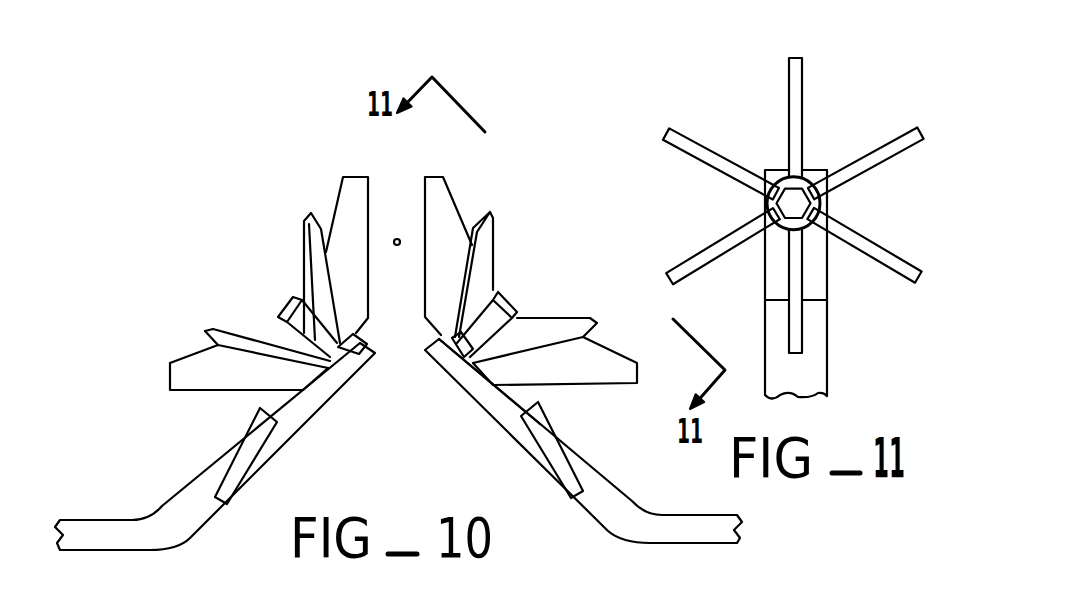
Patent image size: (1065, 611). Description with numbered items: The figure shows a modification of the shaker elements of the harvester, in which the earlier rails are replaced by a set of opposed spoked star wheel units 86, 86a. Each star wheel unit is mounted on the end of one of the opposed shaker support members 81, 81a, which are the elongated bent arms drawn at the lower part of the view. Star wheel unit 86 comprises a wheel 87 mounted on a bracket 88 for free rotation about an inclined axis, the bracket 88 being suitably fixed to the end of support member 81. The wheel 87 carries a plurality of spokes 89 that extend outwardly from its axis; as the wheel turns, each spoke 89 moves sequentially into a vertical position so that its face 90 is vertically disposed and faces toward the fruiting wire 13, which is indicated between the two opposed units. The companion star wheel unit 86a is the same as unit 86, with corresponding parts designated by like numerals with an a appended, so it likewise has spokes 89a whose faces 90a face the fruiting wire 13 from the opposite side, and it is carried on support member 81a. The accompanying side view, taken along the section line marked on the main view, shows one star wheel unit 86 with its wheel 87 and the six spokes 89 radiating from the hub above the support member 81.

In FIG. 10, the fruiting wire 13 is at (395, 246).
In FIG. 10, the shaker support member 81 is at (612, 485).
In FIG. 11, the shaker support member 81 is at (817, 383).
In FIG. 10, the shaker support member 81a is at (180, 491).
In FIG. 10, the star wheel unit 86 is at (517, 295).
In FIG. 11, the star wheel unit 86 is at (857, 87).
In FIG. 10, the star wheel unit 86a is at (283, 302).
In FIG. 10, the wheel 87 is at (452, 355).
In FIG. 11, the wheel 87 is at (817, 278).
In FIG. 10, the bracket 88 is at (496, 417).
In FIG. 10, the spoke 89 is at (495, 230).
In FIG. 10, the spoke 89a is at (308, 232).
In FIG. 10, the face 90 is at (424, 182).
In FIG. 11, the face 90 is at (886, 147).
In FIG. 10, the face 90a is at (371, 178).